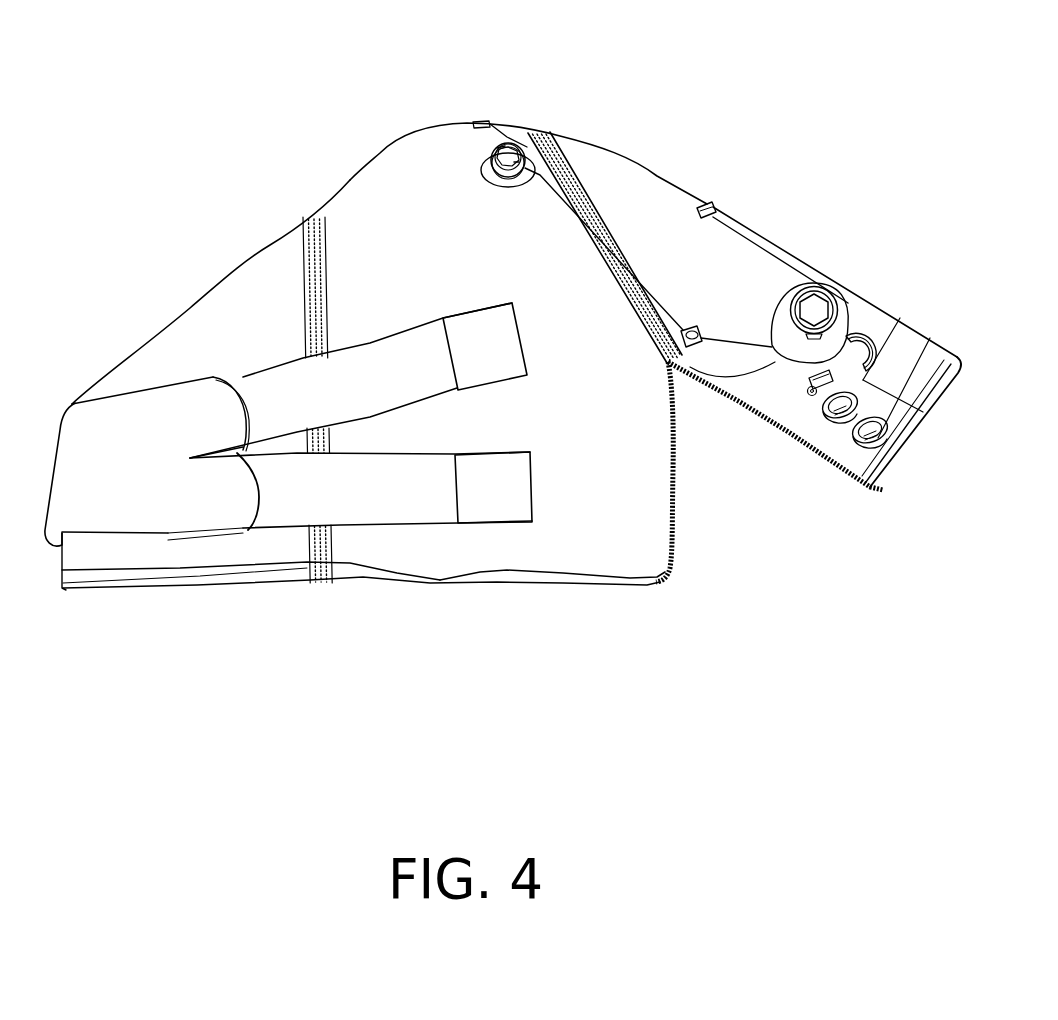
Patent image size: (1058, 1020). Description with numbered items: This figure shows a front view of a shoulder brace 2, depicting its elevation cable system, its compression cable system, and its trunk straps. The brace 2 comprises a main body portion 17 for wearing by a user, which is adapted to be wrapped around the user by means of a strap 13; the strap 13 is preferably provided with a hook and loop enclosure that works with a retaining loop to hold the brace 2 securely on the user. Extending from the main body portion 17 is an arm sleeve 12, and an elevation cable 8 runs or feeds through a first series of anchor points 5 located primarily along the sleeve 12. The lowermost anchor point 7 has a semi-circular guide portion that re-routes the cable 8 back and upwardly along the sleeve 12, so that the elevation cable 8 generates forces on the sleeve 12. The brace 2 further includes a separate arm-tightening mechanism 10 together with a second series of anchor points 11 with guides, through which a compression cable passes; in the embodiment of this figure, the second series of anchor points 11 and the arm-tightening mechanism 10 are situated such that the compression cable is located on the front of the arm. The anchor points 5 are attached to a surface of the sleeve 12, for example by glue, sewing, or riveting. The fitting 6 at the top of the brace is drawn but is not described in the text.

The shoulder brace 2 is at (442, 54).
The first series of anchor points 5 is at (712, 203).
The top fitting 6 is at (507, 148).
The lowermost anchor point 7 is at (873, 347).
The elevation cable 8 is at (647, 293).
The arm-tightening mechanism 10 is at (815, 308).
The second series of anchor points 11 is at (803, 413).
The sleeve 12 is at (865, 332).
The strap 13 is at (422, 390).
The main body portion 17 is at (266, 345).